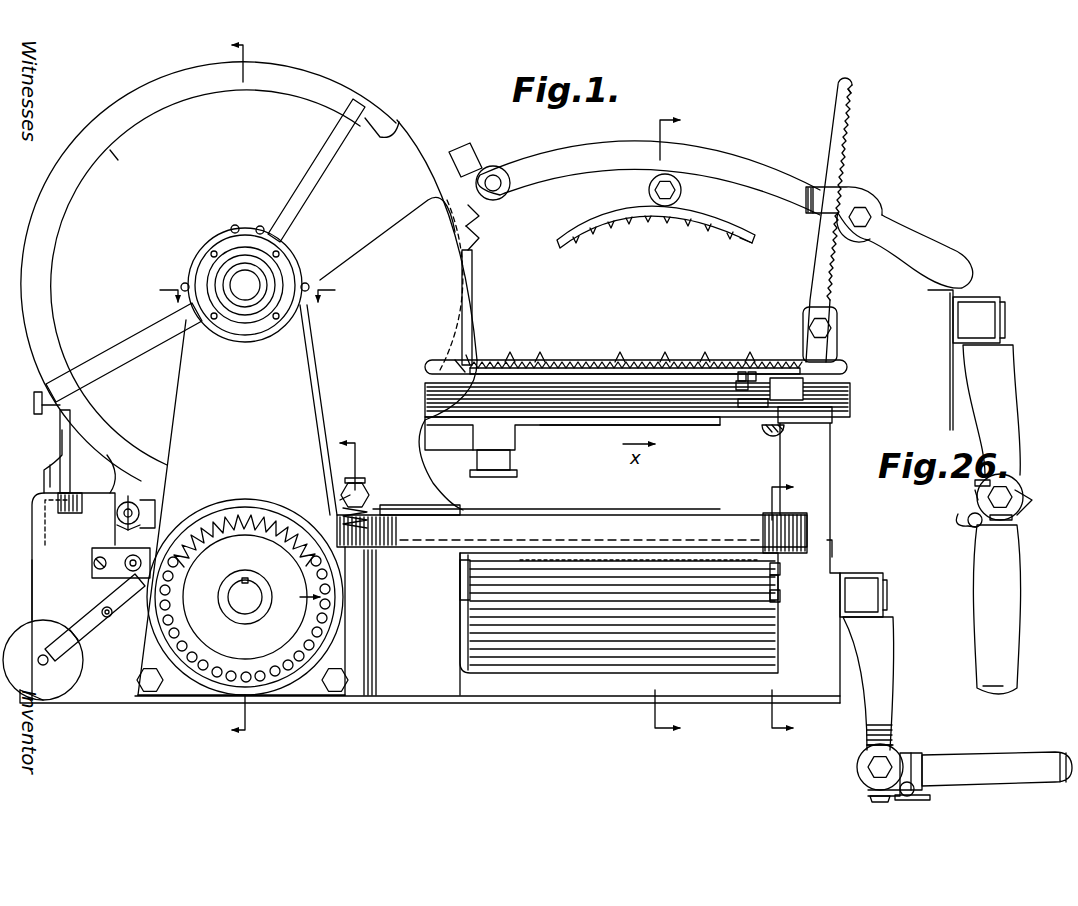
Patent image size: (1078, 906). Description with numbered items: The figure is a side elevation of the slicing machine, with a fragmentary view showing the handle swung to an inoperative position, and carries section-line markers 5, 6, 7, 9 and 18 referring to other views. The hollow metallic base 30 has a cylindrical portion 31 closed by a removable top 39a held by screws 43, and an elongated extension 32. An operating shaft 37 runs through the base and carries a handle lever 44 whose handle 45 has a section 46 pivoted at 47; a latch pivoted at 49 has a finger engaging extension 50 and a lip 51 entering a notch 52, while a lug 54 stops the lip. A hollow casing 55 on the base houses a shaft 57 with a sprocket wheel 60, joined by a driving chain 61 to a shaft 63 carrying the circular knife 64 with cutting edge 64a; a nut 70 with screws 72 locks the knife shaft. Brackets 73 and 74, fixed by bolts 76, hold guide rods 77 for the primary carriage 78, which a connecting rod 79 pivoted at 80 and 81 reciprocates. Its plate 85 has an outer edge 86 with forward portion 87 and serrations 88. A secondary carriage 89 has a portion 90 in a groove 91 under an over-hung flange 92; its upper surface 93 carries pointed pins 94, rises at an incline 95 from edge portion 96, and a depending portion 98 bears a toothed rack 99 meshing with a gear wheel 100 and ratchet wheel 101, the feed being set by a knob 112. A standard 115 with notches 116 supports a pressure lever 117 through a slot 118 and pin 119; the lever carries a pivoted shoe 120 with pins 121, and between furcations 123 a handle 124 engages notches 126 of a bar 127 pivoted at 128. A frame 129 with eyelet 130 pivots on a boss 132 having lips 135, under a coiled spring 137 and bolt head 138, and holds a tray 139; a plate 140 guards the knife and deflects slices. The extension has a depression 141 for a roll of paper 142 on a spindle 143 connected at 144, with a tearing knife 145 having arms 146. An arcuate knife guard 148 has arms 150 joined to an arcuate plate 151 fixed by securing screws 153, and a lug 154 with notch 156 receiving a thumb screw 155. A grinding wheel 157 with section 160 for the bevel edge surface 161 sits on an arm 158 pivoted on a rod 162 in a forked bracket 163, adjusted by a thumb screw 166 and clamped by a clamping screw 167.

In FIG. 1, the section line 5 is at (228, 388).
In FIG. 1, the section line 6 is at (676, 426).
In FIG. 1, the section line 7 is at (791, 609).
In FIG. 1, the section line 9 is at (245, 307).
In FIG. 1, the section line 18 is at (331, 520).
In FIG. 1, the hollow metallic base 30 is at (430, 668).
In FIG. 26, the hollow metallic base 30 is at (954, 360).
In FIG. 1, the cylindrical portion 31 is at (34, 578).
In FIG. 1, the elongated extension 32 is at (402, 621).
In FIG. 1, the operating shaft 37 is at (890, 605).
In FIG. 26, the operating shaft 37 is at (1007, 322).
In FIG. 1, the removable top 39a is at (44, 500).
In FIG. 1, the screws 43 is at (73, 596).
In FIG. 1, the handle lever 44 is at (900, 657).
In FIG. 26, the handle lever 44 is at (1012, 380).
In FIG. 1, the handle 45 is at (1010, 760).
In FIG. 26, the handle 45 is at (1012, 585).
In FIG. 1, the handle section 46 is at (888, 770).
In FIG. 26, the handle section 46 is at (1022, 510).
In FIG. 1, the pivotal connection 47 is at (870, 767).
In FIG. 26, the pivotal connection 47 is at (1003, 495).
In FIG. 1, the latch pivot 49 is at (912, 783).
In FIG. 26, the latch pivot 49 is at (972, 524).
In FIG. 1, the finger engaging extension 50 is at (932, 796).
In FIG. 26, the finger engaging extension 50 is at (958, 518).
In FIG. 1, the lip 51 is at (885, 745).
In FIG. 26, the lip 51 is at (975, 495).
In FIG. 1, the notch 52 is at (866, 792).
In FIG. 26, the notch 52 is at (1010, 512).
In FIG. 1, the lug 54 is at (872, 798).
In FIG. 26, the lug 54 is at (975, 480).
In FIG. 1, the hollow casing 55 is at (242, 500).
In FIG. 1, the shaft 57 is at (240, 593).
In FIG. 1, the sprocket wheel 60 is at (245, 597).
In FIG. 1, the driving chain 61 is at (185, 582).
In FIG. 1, the shaft 63 is at (230, 318).
In FIG. 1, the circular knife 64 is at (205, 277).
In FIG. 1, the cutting edge 64a is at (415, 146).
In FIG. 1, the nut 70 is at (282, 268).
In FIG. 1, the screws 72 is at (217, 280).
In FIG. 1, the supporting bracket 73 is at (107, 482).
In FIG. 1, the supporting bracket 74 is at (832, 545).
In FIG. 1, the bolts 76 is at (60, 448).
In FIG. 1, the guide rods 77 is at (852, 400).
In FIG. 1, the primary carriage 78 is at (850, 367).
In FIG. 1, the connecting rod 79 is at (592, 425).
In FIG. 1, the pivotal connection 80 is at (437, 460).
In FIG. 1, the pivotal connection 81 is at (503, 472).
In FIG. 1, the plate 85 is at (470, 375).
In FIG. 1, the outer edge 86 is at (580, 360).
In FIG. 1, the forward portion 87 is at (455, 372).
In FIG. 1, the serrations 88 is at (620, 352).
In FIG. 1, the secondary carriage 89 is at (510, 350).
In FIG. 1, the portion 90 is at (470, 357).
In FIG. 1, the groove 91 is at (455, 360).
In FIG. 1, the over-hung flange 92 is at (470, 295).
In FIG. 1, the upper surface 93 is at (665, 352).
In FIG. 1, the pointed pins 94 is at (705, 352).
In FIG. 1, the incline 95 is at (540, 350).
In FIG. 1, the edge portion 96 is at (750, 350).
In FIG. 1, the depending portion 98 is at (741, 372).
In FIG. 1, the toothed rack 99 is at (753, 372).
In FIG. 1, the gear wheel 100 is at (738, 395).
In FIG. 1, the ratchet wheel 101 is at (752, 407).
In FIG. 1, the knob 112 is at (772, 432).
In FIG. 1, the standard 115 is at (480, 215).
In FIG. 1, the notches 116 is at (480, 236).
In FIG. 1, the pressure lever 117 is at (547, 160).
In FIG. 1, the slot 118 is at (470, 157).
In FIG. 1, the pin 119 is at (503, 170).
In FIG. 1, the pivoted shoe 120 is at (623, 220).
In FIG. 1, the pointed pins 121 is at (708, 232).
In FIG. 1, the furcations 123 is at (853, 193).
In FIG. 1, the handle 124 is at (900, 237).
In FIG. 1, the notches 126 is at (848, 150).
In FIG. 1, the bar 127 is at (838, 108).
In FIG. 1, the pivot 128 is at (838, 322).
In FIG. 1, the frame 129 is at (580, 540).
In FIG. 1, the eyelet 130 is at (400, 538).
In FIG. 1, the boss 132 is at (362, 593).
In FIG. 1, the lips 135 is at (373, 560).
In FIG. 1, the coiled spring 137 is at (372, 507).
In FIG. 1, the head 138 is at (350, 495).
In FIG. 1, the tray 139 is at (645, 518).
In FIG. 1, the plate 140 is at (398, 245).
In FIG. 1, the depression 141 is at (777, 636).
In FIG. 1, the roll of paper 142 is at (619, 613).
In FIG. 1, the spindle 143 is at (470, 602).
In FIG. 1, the spindle connection 144 is at (771, 603).
In FIG. 1, the tearing knife 145 is at (563, 562).
In FIG. 1, the arms 146 is at (771, 573).
In FIG. 1, the arcuate knife guard 148 is at (157, 90).
In FIG. 1, the arms 150 is at (310, 177).
In FIG. 1, the arcuate plate 151 is at (210, 243).
In FIG. 1, the securing screws 153 is at (256, 228).
In FIG. 1, the lug 154 is at (143, 507).
In FIG. 1, the thumb screw 155 is at (147, 497).
In FIG. 1, the notch 156 is at (143, 520).
In FIG. 1, the grinding wheel 157 is at (43, 660).
In FIG. 1, the arm 158 is at (68, 645).
In FIG. 1, the section 160 is at (47, 697).
In FIG. 1, the bevel edge surface 161 is at (118, 160).
In FIG. 1, the rod 162 is at (125, 570).
In FIG. 1, the forked bracket 163 is at (104, 610).
In FIG. 1, the thumb screw 166 is at (102, 628).
In FIG. 1, the clamping screw 167 is at (100, 563).